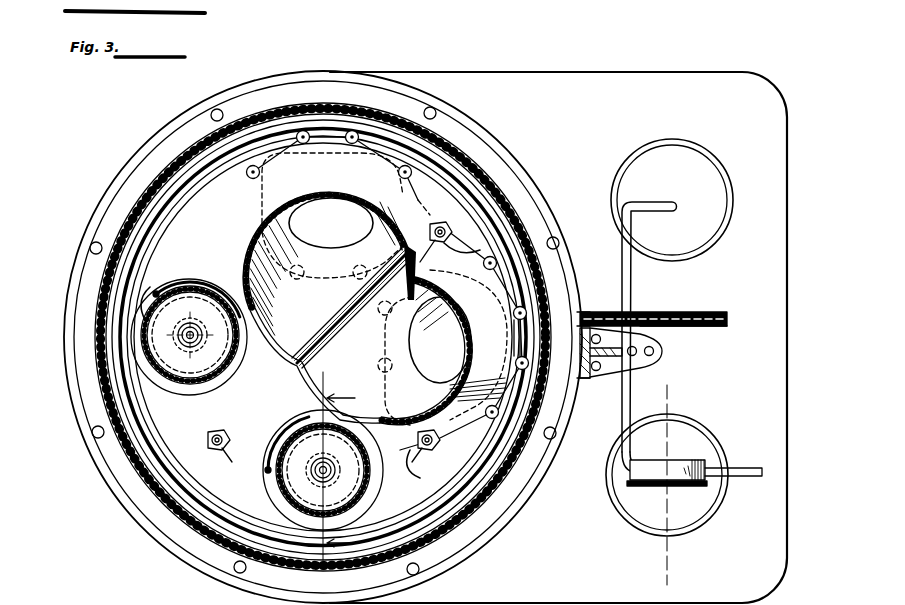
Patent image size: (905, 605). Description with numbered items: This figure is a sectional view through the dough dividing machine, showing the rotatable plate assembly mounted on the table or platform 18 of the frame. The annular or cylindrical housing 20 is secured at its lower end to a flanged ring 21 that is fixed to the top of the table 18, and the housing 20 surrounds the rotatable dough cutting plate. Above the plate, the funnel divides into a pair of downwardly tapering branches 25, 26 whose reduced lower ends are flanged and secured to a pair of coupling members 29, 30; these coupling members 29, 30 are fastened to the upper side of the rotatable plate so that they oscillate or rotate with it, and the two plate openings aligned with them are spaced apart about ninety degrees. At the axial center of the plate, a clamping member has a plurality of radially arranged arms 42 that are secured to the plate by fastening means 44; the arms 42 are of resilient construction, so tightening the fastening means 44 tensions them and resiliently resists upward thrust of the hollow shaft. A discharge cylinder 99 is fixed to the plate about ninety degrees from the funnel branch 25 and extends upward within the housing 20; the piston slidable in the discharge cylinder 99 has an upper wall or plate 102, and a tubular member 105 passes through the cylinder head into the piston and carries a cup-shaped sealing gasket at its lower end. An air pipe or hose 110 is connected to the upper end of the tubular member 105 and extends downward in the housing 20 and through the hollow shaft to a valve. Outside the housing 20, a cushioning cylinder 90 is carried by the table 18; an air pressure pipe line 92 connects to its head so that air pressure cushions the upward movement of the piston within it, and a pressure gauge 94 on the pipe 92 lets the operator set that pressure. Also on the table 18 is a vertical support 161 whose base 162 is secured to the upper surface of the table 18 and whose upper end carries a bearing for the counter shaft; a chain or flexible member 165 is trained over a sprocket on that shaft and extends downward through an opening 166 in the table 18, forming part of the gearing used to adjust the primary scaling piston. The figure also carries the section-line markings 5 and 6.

The table or platform 18 is at (770, 540).
The annular or cylindrical housing 20 is at (490, 173).
The flanged ring 21 is at (98, 278).
The coupling member 30 is at (372, 172).
The coupling member 29 is at (478, 418).
The downwardly tapering branch 26 is at (282, 194).
The downwardly tapering branch 25 is at (442, 420).
The fastening means 44 is at (446, 235).
The radial arms 42 is at (448, 249).
The upper wall or plate 102 is at (163, 324).
The air pipe 110 is at (170, 290).
The discharge cylinder 99 is at (181, 376).
The tubular member 105 is at (198, 346).
The section line 6- 6 is at (345, 466).
The vertical support 161 is at (583, 380).
The base 162 is at (648, 365).
The opening 166 is at (703, 310).
The chain or flexible member 165 is at (687, 327).
The cushioning cylinder 90 is at (733, 224).
The pressure gauge 94 is at (690, 460).
The air pressure pipe line 92 is at (745, 466).
The section line 5- 5 is at (672, 483).